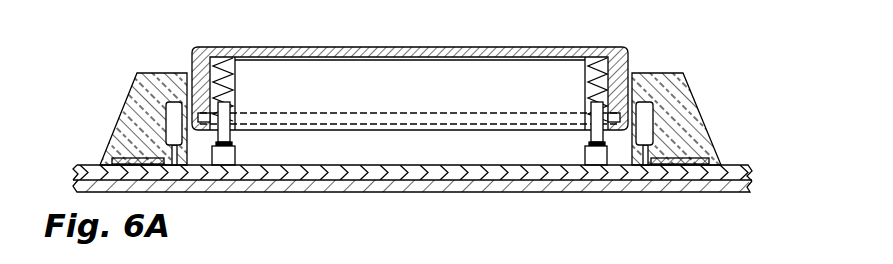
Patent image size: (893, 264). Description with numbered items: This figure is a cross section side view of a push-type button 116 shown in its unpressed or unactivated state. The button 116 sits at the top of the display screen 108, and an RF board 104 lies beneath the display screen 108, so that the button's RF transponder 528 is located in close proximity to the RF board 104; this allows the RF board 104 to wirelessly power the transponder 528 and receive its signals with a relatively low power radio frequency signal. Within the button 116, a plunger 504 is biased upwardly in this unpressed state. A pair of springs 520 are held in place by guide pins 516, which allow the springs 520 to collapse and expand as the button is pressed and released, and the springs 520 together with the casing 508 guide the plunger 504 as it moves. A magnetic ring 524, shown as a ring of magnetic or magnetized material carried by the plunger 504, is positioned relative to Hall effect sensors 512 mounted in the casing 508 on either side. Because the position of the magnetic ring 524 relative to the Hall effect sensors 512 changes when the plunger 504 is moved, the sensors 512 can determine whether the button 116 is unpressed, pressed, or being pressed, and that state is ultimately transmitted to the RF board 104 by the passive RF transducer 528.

The button 116 is at (652, 31).
The plunger 504 is at (482, 46).
The springs 520 is at (229, 50).
The magnetic ring 524 is at (352, 125).
The guide pins 516 is at (236, 153).
The casing 508 is at (131, 92).
The RF transponder 528 is at (133, 160).
The Hall effect sensors 512 is at (164, 123).
The display screen 108 is at (726, 165).
The RF board 104 is at (716, 192).